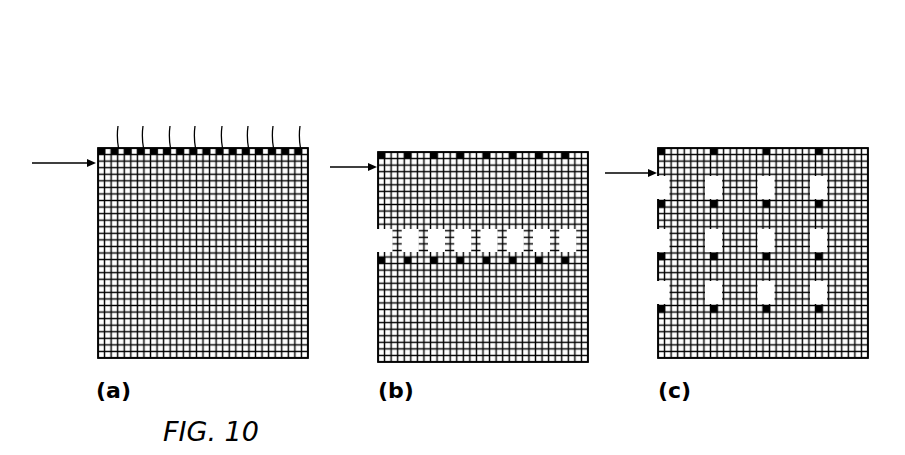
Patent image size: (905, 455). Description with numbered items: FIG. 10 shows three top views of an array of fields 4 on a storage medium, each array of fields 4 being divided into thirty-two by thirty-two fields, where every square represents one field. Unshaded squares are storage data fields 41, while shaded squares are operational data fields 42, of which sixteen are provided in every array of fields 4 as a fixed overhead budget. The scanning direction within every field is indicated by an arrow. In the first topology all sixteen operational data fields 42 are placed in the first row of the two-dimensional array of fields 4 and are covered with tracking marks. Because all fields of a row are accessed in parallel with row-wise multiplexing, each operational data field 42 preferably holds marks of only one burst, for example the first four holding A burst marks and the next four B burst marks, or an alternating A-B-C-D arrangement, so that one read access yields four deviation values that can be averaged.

The array of fields 4 is at (455, 195).
The storage data fields 41 is at (98, 226).
The operational data fields 42 is at (309, 150).